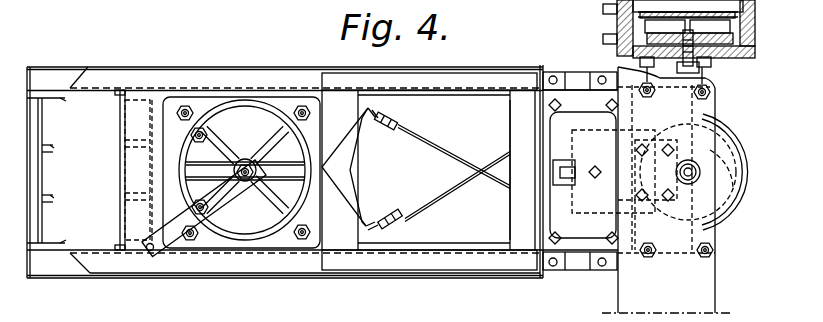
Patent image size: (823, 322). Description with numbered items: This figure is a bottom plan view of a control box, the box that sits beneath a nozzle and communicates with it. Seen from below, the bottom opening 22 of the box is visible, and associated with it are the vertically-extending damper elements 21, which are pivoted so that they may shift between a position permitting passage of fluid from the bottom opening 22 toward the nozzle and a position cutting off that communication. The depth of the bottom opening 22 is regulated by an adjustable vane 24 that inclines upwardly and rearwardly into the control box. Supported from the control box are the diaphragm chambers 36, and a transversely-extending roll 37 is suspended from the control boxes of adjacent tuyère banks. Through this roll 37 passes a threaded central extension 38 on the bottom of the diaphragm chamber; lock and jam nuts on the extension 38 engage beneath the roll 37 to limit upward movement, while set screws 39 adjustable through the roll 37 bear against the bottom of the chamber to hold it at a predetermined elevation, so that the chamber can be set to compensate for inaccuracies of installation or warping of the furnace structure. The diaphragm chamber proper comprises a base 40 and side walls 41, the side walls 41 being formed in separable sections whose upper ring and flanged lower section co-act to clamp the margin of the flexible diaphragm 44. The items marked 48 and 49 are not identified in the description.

The damper elements 21 is at (378, 126).
The bottom opening 22 is at (454, 173).
The adjustable vane 24 is at (510, 208).
The diaphragm chambers 36 is at (732, 34).
The roll 37 is at (733, 270).
The threaded central extension 38 is at (690, 165).
The set screws 39 is at (640, 64).
The base 40 is at (724, 207).
The side walls 41 is at (733, 140).
The flexible diaphragm 44 is at (665, 27).
The washer 48 is at (710, 27).
The cap 49 is at (699, 9).